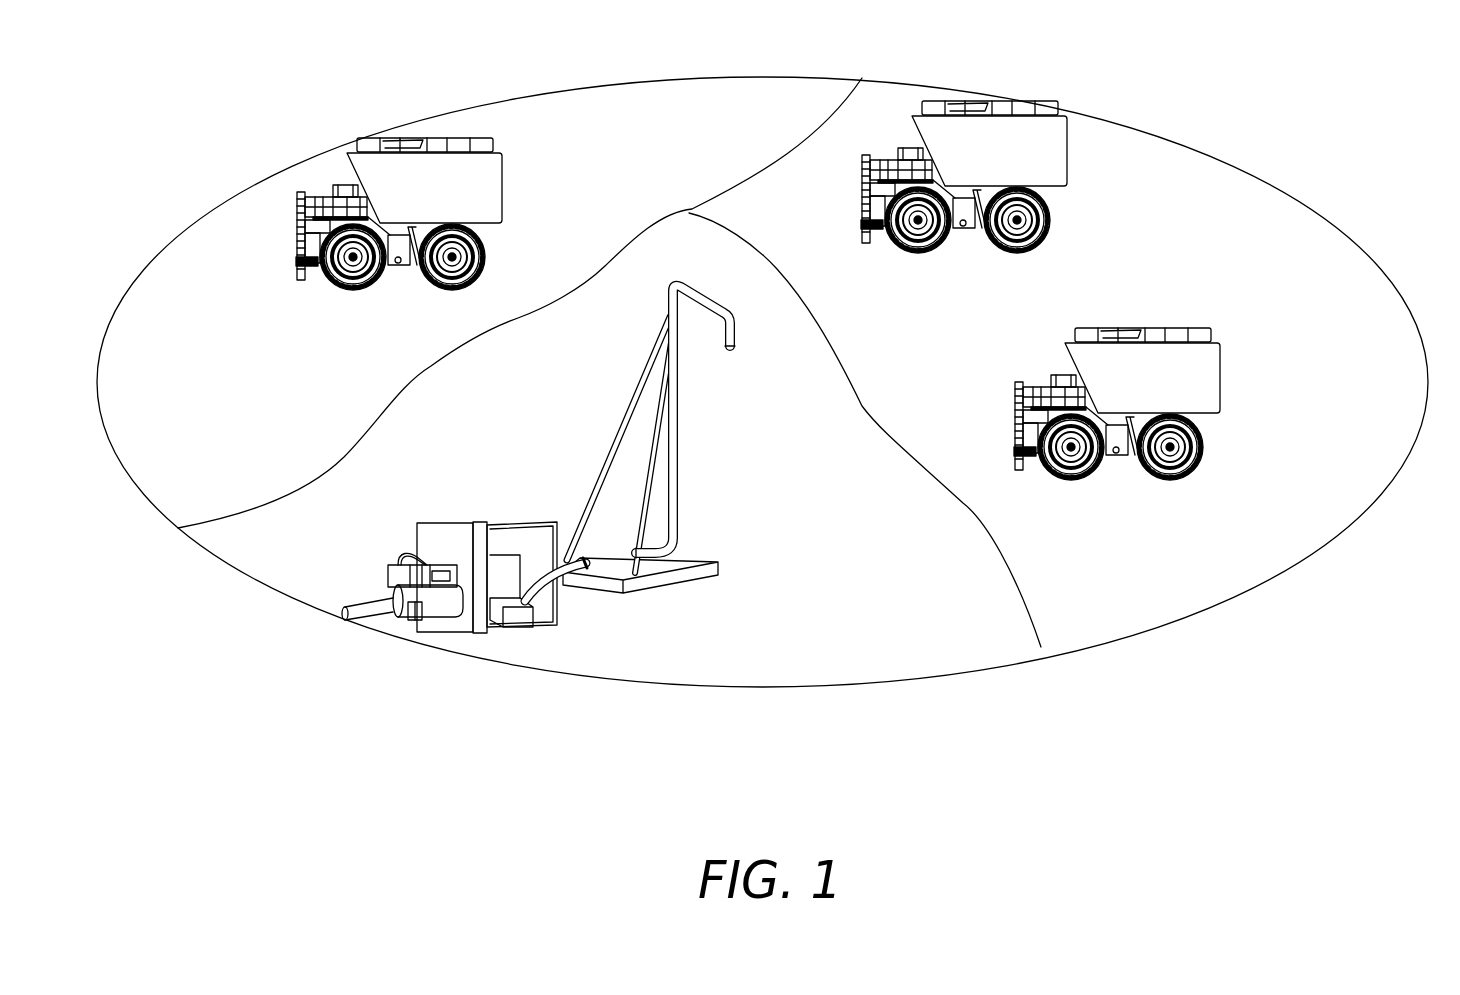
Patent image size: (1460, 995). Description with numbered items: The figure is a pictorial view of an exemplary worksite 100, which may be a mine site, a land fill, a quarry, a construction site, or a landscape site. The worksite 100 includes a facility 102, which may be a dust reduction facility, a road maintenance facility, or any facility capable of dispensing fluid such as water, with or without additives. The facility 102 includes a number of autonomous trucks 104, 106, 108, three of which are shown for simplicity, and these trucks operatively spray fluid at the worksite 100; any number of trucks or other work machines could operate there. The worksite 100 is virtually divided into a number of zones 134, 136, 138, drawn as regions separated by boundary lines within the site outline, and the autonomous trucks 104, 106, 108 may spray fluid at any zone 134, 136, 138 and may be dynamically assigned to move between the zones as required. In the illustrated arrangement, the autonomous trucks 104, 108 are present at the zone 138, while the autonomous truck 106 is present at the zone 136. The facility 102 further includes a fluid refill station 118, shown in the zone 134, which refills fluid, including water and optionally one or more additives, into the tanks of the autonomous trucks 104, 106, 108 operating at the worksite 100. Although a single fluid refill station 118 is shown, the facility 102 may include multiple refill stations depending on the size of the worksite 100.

The worksite 100 is at (804, 45).
The facility 102 is at (1308, 230).
The autonomous truck 104 is at (1256, 330).
The autonomous truck 106 is at (530, 160).
The autonomous truck 108 is at (1088, 116).
The fluid refill station 118 is at (710, 516).
The zone 134 is at (743, 643).
The zone 136 is at (211, 300).
The zone 138 is at (1160, 578).